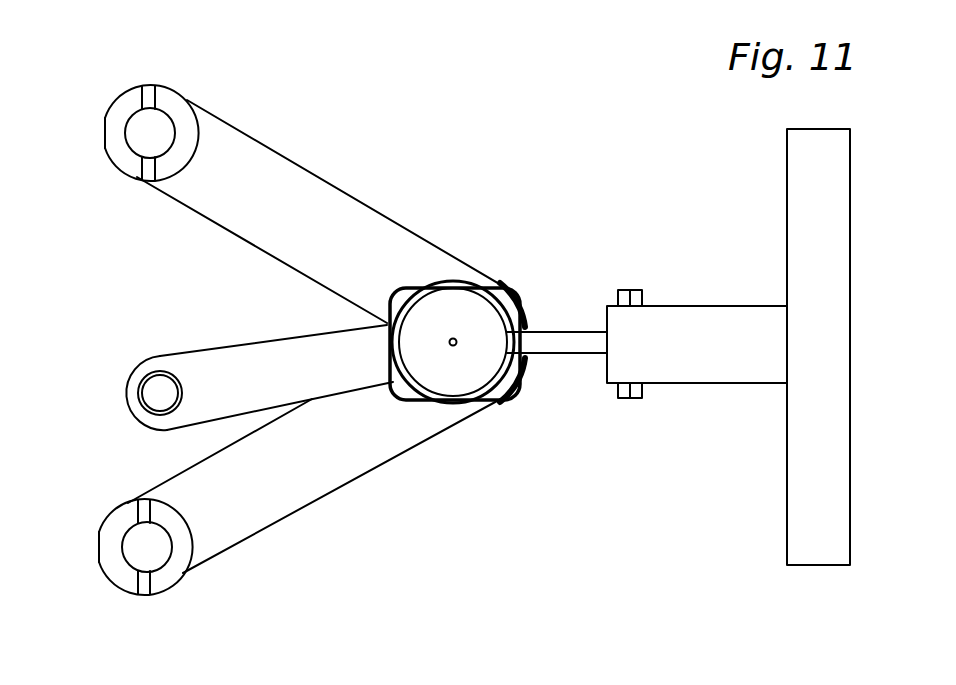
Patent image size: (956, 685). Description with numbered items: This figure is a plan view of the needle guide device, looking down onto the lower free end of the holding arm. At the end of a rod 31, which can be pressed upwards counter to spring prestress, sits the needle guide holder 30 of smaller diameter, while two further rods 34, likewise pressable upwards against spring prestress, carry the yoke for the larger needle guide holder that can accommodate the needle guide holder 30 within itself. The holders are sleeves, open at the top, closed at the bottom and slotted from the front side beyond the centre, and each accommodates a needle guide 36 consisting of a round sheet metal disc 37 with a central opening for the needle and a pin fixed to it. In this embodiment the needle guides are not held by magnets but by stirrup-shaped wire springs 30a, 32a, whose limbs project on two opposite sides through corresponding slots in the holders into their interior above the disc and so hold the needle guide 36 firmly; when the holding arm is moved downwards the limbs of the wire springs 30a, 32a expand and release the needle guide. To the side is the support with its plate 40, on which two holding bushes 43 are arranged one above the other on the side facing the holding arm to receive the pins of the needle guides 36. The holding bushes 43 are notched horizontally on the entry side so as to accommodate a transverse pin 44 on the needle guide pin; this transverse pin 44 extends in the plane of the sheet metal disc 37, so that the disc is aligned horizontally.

The needle guide holder 30 is at (458, 290).
The wire spring 30a is at (401, 298).
The rod 31 is at (155, 395).
The wire spring 32a is at (522, 288).
The rods 34 is at (145, 128).
The needle guide 36 is at (553, 360).
The sheet metal disc 37 is at (466, 362).
The plate 40 is at (838, 262).
The holding bushes 43 is at (703, 327).
The transverse pin 44 is at (622, 398).